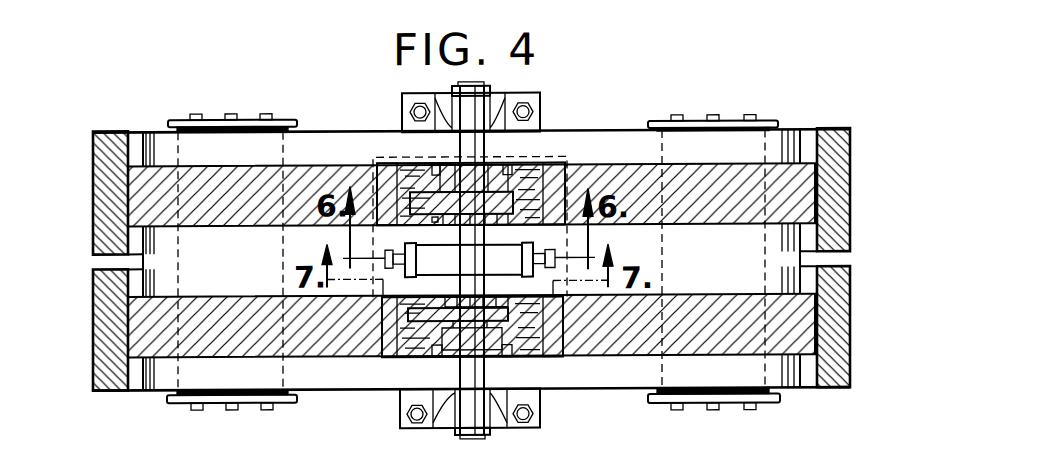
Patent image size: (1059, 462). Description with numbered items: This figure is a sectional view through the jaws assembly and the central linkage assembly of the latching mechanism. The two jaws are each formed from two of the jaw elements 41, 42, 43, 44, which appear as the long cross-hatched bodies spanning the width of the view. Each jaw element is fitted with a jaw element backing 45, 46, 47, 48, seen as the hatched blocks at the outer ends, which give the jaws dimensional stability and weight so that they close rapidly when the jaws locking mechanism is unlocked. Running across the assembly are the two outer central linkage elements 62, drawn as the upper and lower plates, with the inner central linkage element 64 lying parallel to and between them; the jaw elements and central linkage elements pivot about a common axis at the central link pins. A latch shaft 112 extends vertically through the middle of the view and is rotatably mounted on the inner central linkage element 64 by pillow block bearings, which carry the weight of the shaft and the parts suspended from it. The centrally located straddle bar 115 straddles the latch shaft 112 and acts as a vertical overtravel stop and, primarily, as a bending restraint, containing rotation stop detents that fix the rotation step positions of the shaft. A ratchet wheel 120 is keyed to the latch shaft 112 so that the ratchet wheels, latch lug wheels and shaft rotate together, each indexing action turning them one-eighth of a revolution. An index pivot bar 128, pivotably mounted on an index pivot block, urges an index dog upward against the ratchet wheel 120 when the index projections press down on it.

The jaw element 41 is at (163, 344).
The jaw element 42 is at (727, 348).
The jaw element 43 is at (162, 173).
The jaw element 44 is at (720, 176).
The jaw element backing 45 is at (100, 331).
The jaw element backing 46 is at (840, 316).
The jaw element backing 47 is at (100, 201).
The jaw element backing 48 is at (840, 176).
The outer central linkage element 62 is at (340, 142).
The inner central linkage element 64 is at (228, 258).
The latch shaft 112 is at (484, 368).
The straddle bar 115 is at (448, 270).
The ratchet wheel 120 is at (508, 302).
The index pivot bar 128 is at (426, 314).